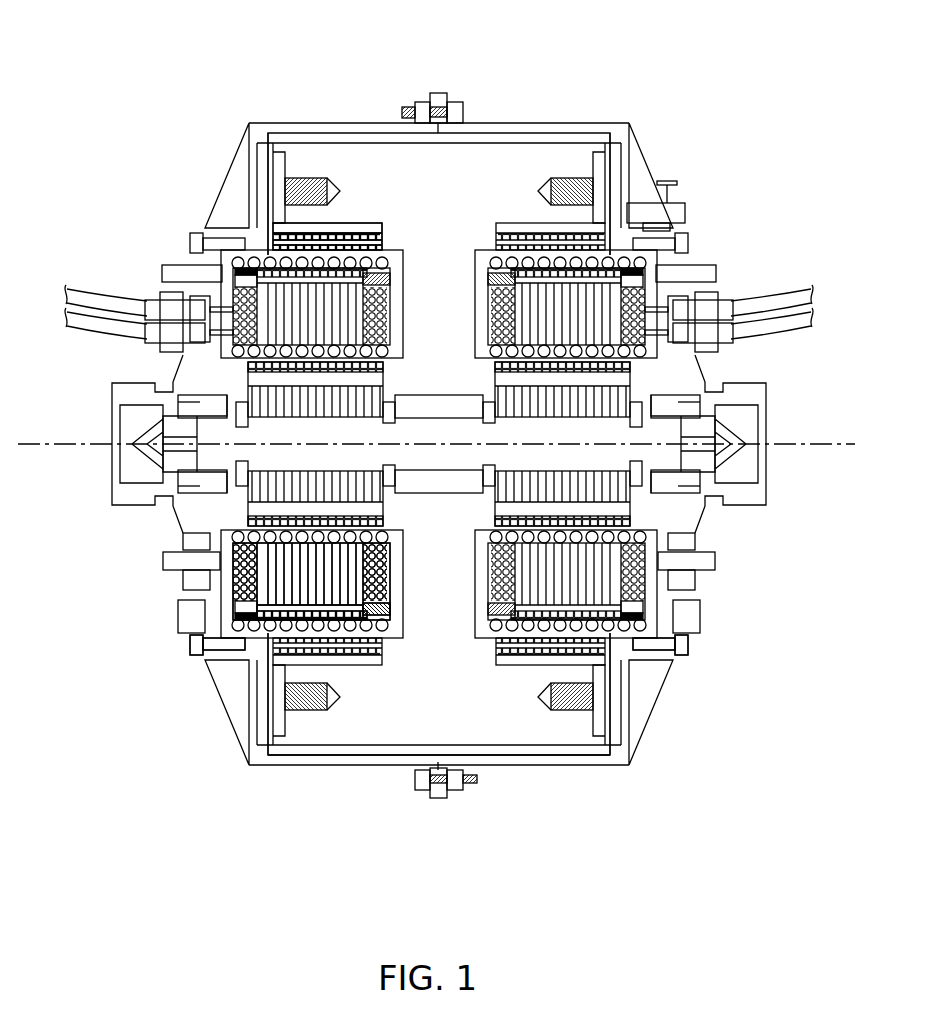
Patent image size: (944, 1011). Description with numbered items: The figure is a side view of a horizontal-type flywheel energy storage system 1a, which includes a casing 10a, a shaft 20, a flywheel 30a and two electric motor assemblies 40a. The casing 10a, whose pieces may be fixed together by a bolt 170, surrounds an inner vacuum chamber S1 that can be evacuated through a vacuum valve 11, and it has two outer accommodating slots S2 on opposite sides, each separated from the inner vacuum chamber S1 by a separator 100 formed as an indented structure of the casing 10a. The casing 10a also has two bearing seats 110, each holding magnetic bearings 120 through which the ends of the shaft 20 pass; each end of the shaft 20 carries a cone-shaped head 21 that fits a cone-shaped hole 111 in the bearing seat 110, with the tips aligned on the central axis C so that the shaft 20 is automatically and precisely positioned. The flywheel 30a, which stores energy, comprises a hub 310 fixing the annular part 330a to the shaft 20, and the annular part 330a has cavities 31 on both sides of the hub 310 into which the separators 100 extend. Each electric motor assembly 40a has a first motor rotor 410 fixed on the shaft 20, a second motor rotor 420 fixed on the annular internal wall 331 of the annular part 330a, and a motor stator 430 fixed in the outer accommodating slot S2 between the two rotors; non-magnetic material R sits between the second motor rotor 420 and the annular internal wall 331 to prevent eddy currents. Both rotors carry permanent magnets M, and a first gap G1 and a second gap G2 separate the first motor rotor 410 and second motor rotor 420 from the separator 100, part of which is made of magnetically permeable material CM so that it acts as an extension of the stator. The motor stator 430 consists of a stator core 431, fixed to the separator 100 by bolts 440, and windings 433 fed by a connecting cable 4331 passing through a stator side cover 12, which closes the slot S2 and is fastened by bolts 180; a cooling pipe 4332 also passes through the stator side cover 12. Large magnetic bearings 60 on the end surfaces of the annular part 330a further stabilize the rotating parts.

The flywheel energy storage system 1a is at (158, 34).
The flywheel 30a is at (517, 62).
The annular part 330a is at (388, 170).
The hub 310 is at (440, 290).
The casing 10a is at (626, 128).
The bearings 60 is at (265, 173).
The annular internal wall 331 is at (322, 230).
The non-magnetic material R is at (280, 225).
The vacuum valve 11 is at (675, 212).
The outer accommodating slot S2 is at (652, 272).
The cooling pipe 4332 is at (700, 275).
The connecting cable 4331 is at (780, 297).
The inner vacuum chamber S1 is at (640, 375).
The first gap G1 is at (227, 363).
The permanent magnet M is at (213, 377).
The bearing seat 110 is at (125, 397).
The cone-shaped hole 111 is at (160, 443).
The cone-shaped head 21 is at (180, 455).
The bearing 120 is at (193, 493).
The central axis C is at (447, 446).
The magnetically permeable material CM is at (255, 535).
The windings 433 is at (227, 560).
The stator core 431 is at (273, 580).
The bolts 440 is at (230, 613).
The stator side cover 12 is at (652, 656).
The bolts 180 is at (680, 648).
The second gap G2 is at (266, 646).
The shaft 20 is at (597, 465).
The first motor rotor 410 is at (597, 520).
The motor stator 430 is at (600, 572).
The second motor rotor 420 is at (622, 625).
The electric motor assembly 40a is at (772, 540).
The cavity 31 is at (483, 518).
The bolt 170 is at (422, 783).
The separator 100 is at (492, 735).